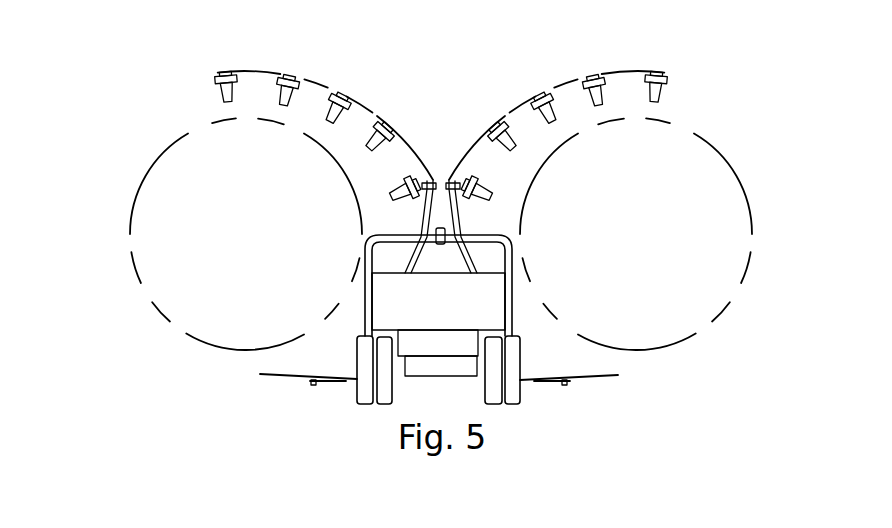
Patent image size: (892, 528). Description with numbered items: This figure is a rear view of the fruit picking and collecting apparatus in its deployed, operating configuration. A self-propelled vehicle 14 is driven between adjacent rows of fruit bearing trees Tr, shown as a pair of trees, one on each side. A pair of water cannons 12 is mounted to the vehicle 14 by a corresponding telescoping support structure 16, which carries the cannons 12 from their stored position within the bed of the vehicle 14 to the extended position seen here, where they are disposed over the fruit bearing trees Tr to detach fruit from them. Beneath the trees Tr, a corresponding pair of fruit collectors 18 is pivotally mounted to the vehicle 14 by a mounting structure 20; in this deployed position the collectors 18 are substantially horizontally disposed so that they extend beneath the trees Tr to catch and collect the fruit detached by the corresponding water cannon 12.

The water cannon 12 is at (176, 78).
The self-propelled vehicle 14 is at (338, 306).
The telescoping support structure 16 is at (390, 96).
The fruit collector 18 is at (256, 403).
The mounting structure 20 is at (332, 397).
The fruit bearing tree Tr is at (127, 235).